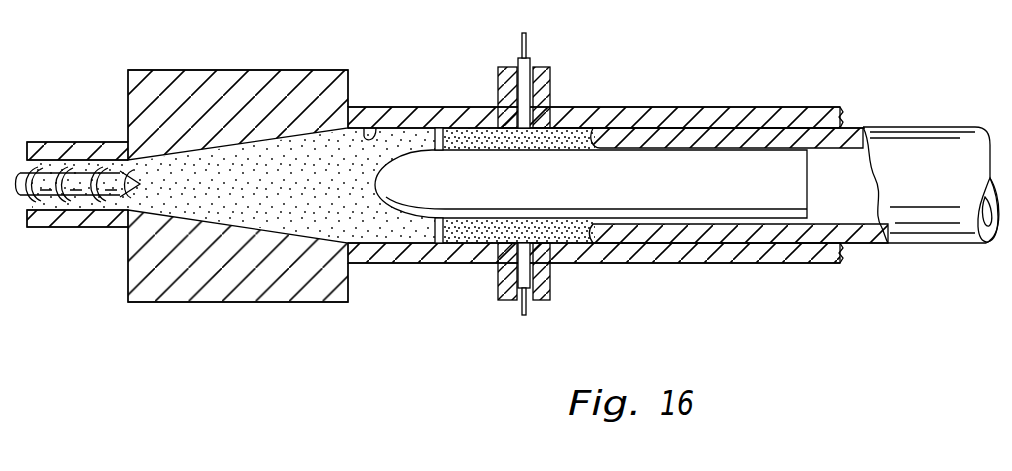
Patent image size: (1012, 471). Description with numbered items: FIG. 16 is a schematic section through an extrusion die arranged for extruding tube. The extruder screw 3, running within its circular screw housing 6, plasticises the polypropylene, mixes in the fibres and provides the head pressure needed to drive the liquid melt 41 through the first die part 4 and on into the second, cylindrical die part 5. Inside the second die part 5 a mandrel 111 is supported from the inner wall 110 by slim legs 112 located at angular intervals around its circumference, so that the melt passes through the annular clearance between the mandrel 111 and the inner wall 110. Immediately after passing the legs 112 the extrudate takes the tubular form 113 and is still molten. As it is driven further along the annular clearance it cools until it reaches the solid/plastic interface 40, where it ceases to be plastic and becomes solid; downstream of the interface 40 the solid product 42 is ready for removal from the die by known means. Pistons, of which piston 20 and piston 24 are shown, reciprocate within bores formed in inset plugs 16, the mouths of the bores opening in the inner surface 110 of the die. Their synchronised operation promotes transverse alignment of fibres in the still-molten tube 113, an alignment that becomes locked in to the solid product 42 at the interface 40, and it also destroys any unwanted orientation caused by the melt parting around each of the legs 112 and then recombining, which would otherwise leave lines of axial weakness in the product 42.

The extruder screw 3 is at (57, 180).
The first die part 4 is at (234, 70).
The second die part 5 is at (407, 107).
The screw housing 6 is at (84, 228).
The inset plug 16 is at (553, 122).
The piston 20 is at (527, 65).
The piston 24 is at (553, 274).
The solid/plastic interface 40 is at (600, 135).
The liquid melt 41 is at (253, 192).
The solid product 42 is at (730, 135).
The inner wall 110 is at (364, 128).
The mandrel 111 is at (423, 197).
The slim legs 112 is at (447, 227).
The tubular extrudate 113 is at (483, 130).